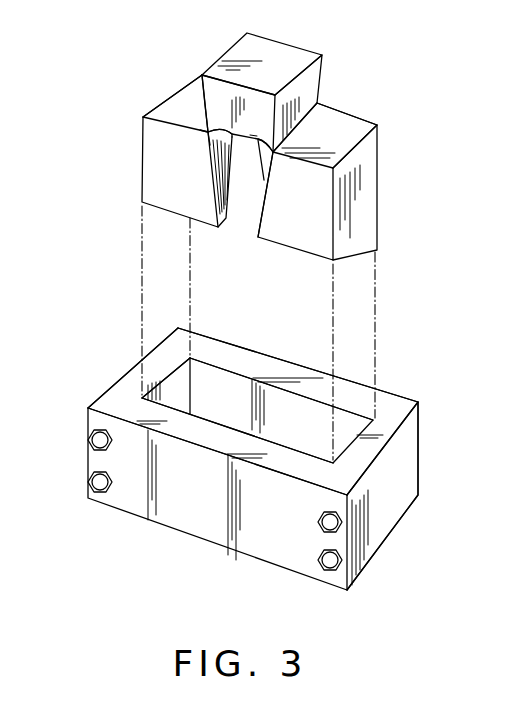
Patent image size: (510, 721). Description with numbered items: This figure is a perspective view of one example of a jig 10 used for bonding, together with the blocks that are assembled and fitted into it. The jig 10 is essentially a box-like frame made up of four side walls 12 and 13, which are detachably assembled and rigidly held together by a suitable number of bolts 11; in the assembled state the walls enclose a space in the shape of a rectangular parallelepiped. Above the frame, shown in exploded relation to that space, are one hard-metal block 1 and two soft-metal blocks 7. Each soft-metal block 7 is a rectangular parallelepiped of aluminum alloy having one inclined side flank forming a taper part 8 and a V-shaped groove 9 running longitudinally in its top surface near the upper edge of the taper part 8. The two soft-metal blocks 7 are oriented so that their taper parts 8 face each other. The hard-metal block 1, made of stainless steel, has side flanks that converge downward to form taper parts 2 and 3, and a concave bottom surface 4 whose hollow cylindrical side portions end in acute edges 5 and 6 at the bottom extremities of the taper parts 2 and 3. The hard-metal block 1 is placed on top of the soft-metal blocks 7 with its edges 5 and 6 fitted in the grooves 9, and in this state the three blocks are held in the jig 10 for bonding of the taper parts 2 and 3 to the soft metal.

The hard-metal block 1 is at (271, 66).
The taper part 2 is at (308, 83).
The taper part 3 is at (200, 92).
The bottom surface 4 is at (216, 150).
The acute edge 5 is at (273, 152).
The acute edge 6 is at (207, 134).
The soft-metal block 7 is at (171, 97).
The taper part 8 is at (230, 204).
The V-shaped groove 9 is at (206, 130).
The jig 10 is at (170, 497).
The bolts 11 is at (92, 481).
The side walls 12 is at (270, 370).
The side walls 13 is at (133, 378).